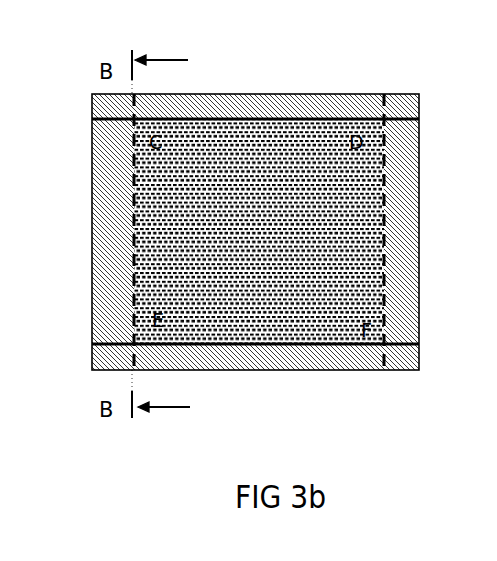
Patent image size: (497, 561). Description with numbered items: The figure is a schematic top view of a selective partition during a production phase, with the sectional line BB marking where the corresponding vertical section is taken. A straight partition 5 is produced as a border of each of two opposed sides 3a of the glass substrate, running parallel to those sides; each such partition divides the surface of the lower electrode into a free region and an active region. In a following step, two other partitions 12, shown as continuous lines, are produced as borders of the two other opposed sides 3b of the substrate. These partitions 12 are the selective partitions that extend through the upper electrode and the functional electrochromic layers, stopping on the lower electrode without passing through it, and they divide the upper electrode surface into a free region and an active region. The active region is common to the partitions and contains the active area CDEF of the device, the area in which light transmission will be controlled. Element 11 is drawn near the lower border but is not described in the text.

The opposed sides of the glass substrate 3a is at (84, 170).
The other opposed sides of the substrate 3b is at (386, 86).
The straight partition 5 is at (372, 140).
The bottom frame portion 11 is at (370, 348).
The selective partitions 12 is at (238, 111).